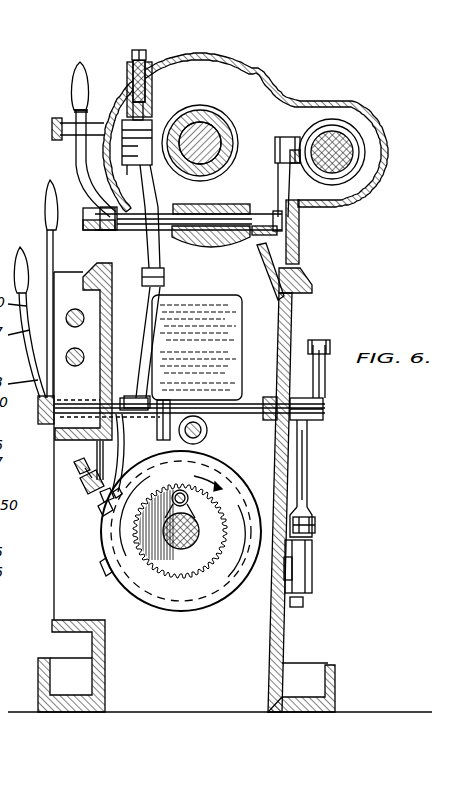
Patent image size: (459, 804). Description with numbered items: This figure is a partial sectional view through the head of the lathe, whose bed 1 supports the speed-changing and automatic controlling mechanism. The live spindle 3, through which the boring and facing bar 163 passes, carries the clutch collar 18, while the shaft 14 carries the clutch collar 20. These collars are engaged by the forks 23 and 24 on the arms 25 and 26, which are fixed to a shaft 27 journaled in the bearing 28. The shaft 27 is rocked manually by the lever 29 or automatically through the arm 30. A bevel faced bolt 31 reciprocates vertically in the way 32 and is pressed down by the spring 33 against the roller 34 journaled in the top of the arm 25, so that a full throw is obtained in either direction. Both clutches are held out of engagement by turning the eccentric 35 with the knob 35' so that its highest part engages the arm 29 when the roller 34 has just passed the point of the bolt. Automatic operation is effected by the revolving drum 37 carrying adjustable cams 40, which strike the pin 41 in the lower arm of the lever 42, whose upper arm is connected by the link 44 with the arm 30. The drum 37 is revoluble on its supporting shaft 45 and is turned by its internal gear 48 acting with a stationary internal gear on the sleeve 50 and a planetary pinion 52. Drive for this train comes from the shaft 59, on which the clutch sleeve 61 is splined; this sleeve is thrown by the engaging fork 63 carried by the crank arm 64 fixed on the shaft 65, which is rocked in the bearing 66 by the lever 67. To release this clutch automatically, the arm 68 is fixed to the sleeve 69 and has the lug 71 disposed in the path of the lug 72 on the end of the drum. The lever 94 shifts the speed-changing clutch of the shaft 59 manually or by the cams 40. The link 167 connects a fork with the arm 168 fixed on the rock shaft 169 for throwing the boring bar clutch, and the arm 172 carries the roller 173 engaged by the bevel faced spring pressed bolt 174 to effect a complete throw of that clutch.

The lathe bed 1 is at (284, 646).
The live spindle 3 is at (215, 138).
The shaft 14 is at (338, 164).
The clutch sleeve or collar 18 is at (224, 115).
The clutch sleeve or collar 20 is at (350, 122).
The fork 23 is at (203, 105).
The fork 24 is at (311, 128).
The arm 25 is at (140, 182).
The arm 26 is at (311, 208).
The shaft 27 is at (226, 249).
The bearing 28 is at (228, 204).
The lever 29 is at (72, 80).
The arm 30 is at (141, 244).
The bevel faced bolt 31 is at (121, 96).
The way 32 is at (127, 72).
The spring 33 is at (146, 68).
The roller 34 is at (122, 140).
The eccentric 35 is at (56, 118).
The knob 35' is at (35, 131).
The revolving drum 37 is at (222, 607).
The cams 40 is at (101, 563).
The pin 41 is at (82, 478).
The lever 42 is at (143, 335).
The link 44 is at (164, 275).
The supporting shaft 45 is at (190, 545).
The internal gear 48 is at (170, 581).
The sleeve 50 is at (198, 528).
The planetary pinion 52 is at (206, 497).
The shaft 59 is at (208, 428).
The clutch sleeve 61 is at (206, 422).
The engaging fork 63 is at (180, 404).
The crank arm 64 is at (165, 390).
The shaft 65 is at (40, 421).
The bearing 66 is at (70, 437).
The lever 67 is at (44, 215).
The arm 68 is at (97, 450).
The sleeve 69 is at (126, 433).
The lug 71 is at (103, 505).
The lug 72 is at (105, 493).
The lever 94 is at (76, 466).
The boring and facing bar 163 is at (231, 152).
The link 167 is at (329, 350).
The arm 168 is at (326, 372).
The rock shaft 169 is at (248, 405).
The arm 172 is at (308, 470).
The roller 173 is at (316, 525).
The bevel faced spring pressed bolt 174 is at (314, 543).